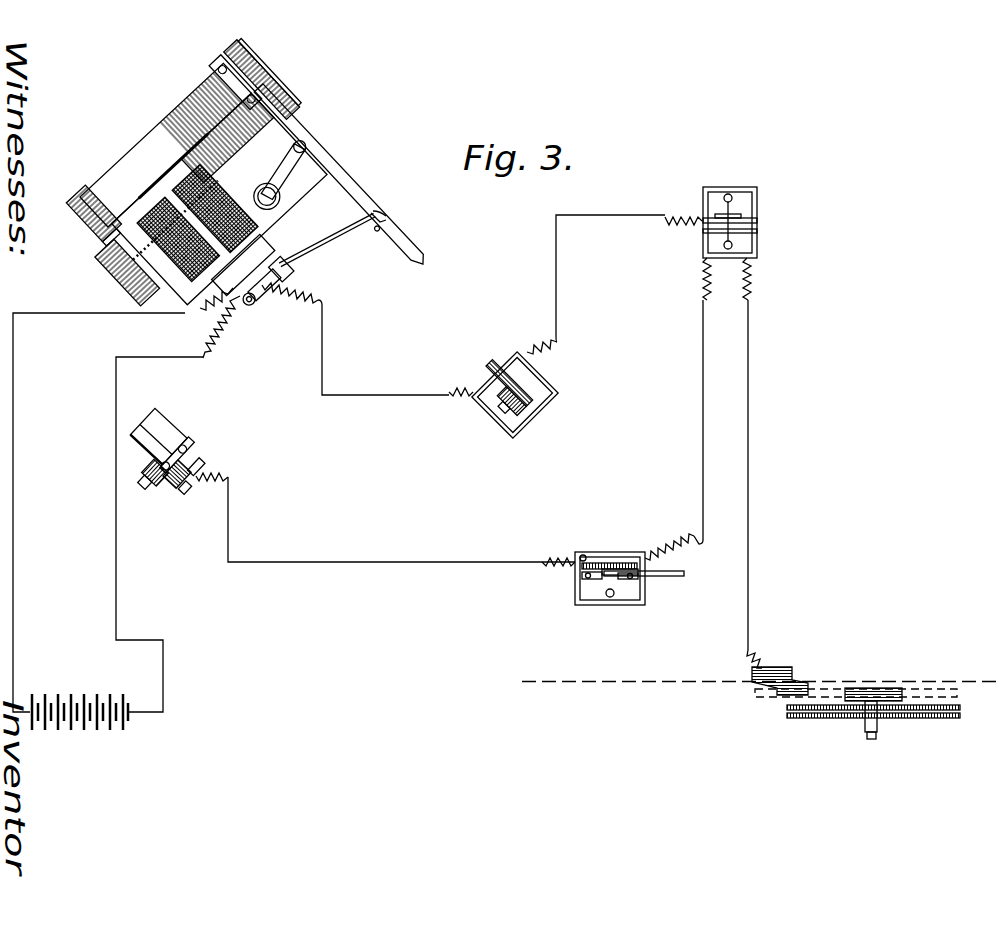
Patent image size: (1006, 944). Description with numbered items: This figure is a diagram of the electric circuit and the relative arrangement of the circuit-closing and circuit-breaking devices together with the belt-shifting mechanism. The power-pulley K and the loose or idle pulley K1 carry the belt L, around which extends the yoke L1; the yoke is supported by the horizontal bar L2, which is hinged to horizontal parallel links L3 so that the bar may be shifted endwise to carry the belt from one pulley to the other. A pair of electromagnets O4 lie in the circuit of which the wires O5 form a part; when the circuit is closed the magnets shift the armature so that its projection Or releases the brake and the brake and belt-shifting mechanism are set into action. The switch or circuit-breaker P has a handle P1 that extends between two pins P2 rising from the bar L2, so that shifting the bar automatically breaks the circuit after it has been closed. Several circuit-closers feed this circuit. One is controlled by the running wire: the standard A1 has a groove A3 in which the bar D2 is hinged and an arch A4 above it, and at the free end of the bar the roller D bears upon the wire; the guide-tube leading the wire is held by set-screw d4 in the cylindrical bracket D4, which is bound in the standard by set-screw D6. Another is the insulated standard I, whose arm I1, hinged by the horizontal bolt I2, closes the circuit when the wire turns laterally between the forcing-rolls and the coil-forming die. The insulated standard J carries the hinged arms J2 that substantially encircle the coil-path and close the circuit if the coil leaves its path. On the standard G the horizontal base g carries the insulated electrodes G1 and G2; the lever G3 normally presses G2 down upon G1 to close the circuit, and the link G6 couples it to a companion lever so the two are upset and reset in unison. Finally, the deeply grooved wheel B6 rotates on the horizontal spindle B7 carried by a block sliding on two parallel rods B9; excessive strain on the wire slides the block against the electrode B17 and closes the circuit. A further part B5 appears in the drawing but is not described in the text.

The power-pulley K is at (191, 194).
The loose or idle pulley K1 is at (227, 138).
The pair of electromagnets O4 is at (172, 204).
The wires O5 is at (322, 338).
The projection Or is at (228, 357).
The switch or circuit-breaker P is at (262, 282).
The handle P1 is at (340, 247).
The pins P2 is at (387, 218).
The belt L is at (212, 84).
The yoke L1 is at (292, 66).
The horizontal bar L2 is at (338, 190).
The horizontal parallel links L3 is at (318, 160).
The standard A1 is at (163, 425).
The groove A3 is at (133, 443).
The arch A4 is at (188, 447).
The roller D is at (193, 468).
The bar D2 is at (152, 440).
The bracket D4 is at (172, 484).
The set-screw D6 is at (143, 483).
The set-screw d4 is at (194, 496).
The insulated standard I is at (533, 384).
The arm I1 is at (488, 366).
The horizontal bolt I2 is at (495, 406).
The insulated standard J is at (708, 242).
The arms J2 is at (757, 231).
The horizontal base g is at (627, 602).
The standard G is at (614, 568).
The electrode G1 is at (595, 580).
The electrode G2 is at (630, 582).
The lever G3 is at (603, 569).
The link G6 is at (673, 573).
The electrode B17 is at (785, 676).
The slide block B5 is at (870, 688).
The parallel rods B9 is at (925, 688).
The wheel B6 is at (873, 728).
The horizontal spindle B7 is at (872, 740).